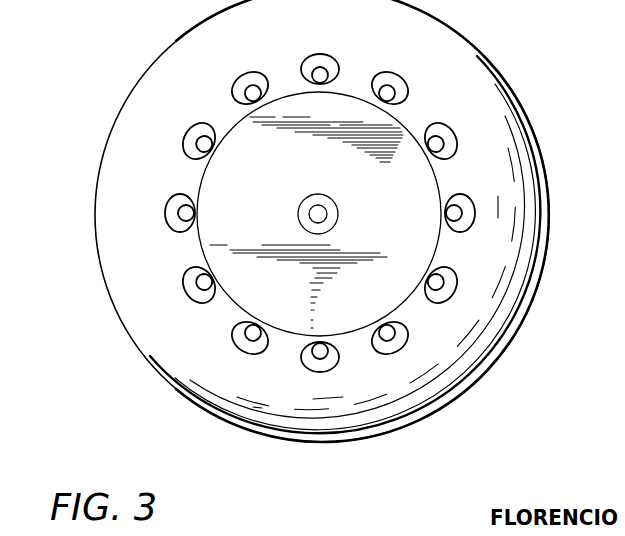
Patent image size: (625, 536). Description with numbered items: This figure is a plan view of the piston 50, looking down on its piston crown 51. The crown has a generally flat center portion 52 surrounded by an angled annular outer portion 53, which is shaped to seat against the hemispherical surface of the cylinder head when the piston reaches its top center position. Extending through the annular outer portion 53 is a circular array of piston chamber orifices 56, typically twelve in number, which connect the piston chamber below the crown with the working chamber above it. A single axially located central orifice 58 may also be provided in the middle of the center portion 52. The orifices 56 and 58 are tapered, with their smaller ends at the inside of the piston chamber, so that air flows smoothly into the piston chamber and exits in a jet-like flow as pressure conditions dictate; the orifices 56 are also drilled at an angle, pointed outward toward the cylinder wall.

The piston 50 is at (541, 179).
The piston crown 51 is at (427, 107).
The center portion 52 is at (265, 212).
The annular outer portion 53 is at (130, 127).
The piston chamber orifices 56 is at (385, 77).
The central orifice 58 is at (322, 195).